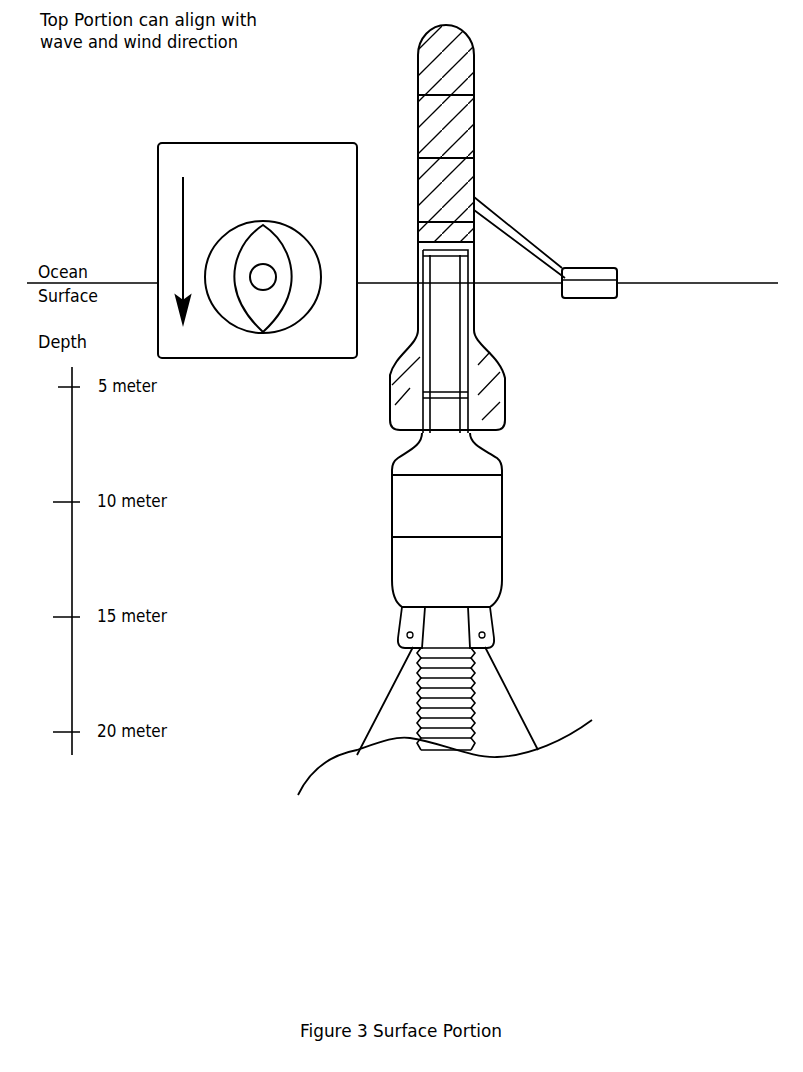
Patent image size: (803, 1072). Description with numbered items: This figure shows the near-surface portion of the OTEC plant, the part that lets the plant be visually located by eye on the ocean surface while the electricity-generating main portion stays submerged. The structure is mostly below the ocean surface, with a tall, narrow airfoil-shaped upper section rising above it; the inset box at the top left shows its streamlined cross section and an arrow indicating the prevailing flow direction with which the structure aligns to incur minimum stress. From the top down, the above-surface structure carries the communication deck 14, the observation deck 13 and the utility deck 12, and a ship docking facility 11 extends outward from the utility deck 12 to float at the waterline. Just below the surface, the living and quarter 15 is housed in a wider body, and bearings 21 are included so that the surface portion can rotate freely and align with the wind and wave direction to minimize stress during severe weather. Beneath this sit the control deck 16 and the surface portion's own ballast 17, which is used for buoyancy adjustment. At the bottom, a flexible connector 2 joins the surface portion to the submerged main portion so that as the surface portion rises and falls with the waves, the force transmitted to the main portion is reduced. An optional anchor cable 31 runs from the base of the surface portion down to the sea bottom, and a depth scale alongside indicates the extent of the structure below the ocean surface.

The flexible connector 2 is at (470, 715).
The ship docking facility 11 is at (602, 268).
The utility deck 12 is at (476, 185).
The observation deck 13 is at (476, 125).
The communication deck 14 is at (475, 60).
The living and quarter 15 is at (500, 395).
The control deck 16 is at (493, 505).
The ballast 17 is at (482, 577).
The bearings 21 is at (468, 258).
The anchor cable 31 is at (380, 700).